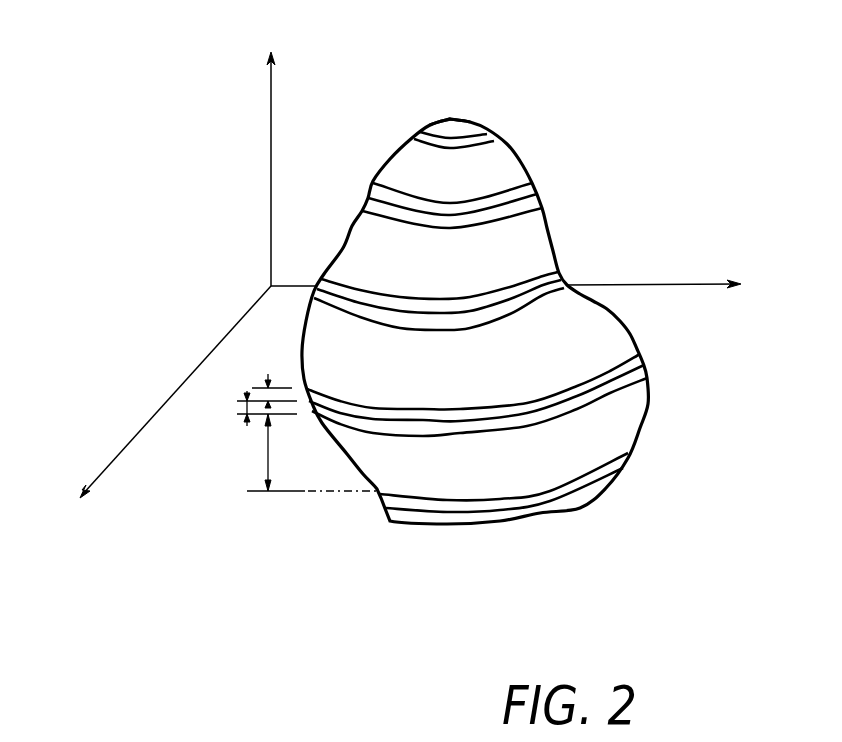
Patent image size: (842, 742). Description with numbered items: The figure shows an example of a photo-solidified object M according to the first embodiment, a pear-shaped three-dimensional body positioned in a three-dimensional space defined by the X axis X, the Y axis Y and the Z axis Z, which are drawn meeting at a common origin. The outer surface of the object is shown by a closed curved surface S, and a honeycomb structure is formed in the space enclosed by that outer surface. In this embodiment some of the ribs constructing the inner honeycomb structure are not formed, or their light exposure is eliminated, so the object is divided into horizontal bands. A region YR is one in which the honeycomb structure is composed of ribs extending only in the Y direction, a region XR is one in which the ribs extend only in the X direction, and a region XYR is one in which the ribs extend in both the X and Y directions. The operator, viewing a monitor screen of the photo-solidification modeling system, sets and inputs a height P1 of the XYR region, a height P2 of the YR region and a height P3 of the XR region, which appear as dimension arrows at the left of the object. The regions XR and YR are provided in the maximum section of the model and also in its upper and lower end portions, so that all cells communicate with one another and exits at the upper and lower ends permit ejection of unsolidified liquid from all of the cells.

The Z axis Z is at (265, 148).
The Y axis Y is at (518, 284).
The X axis X is at (166, 410).
The closed curved surface S is at (343, 246).
The photo-solidified object M is at (445, 111).
The XR region XR is at (478, 119).
The YR region YR is at (497, 140).
The XYR region XYR is at (515, 148).
The height of the XYR region P1 is at (298, 452).
The height of the YR region P2 is at (238, 408).
The height of the XR region P3 is at (268, 372).